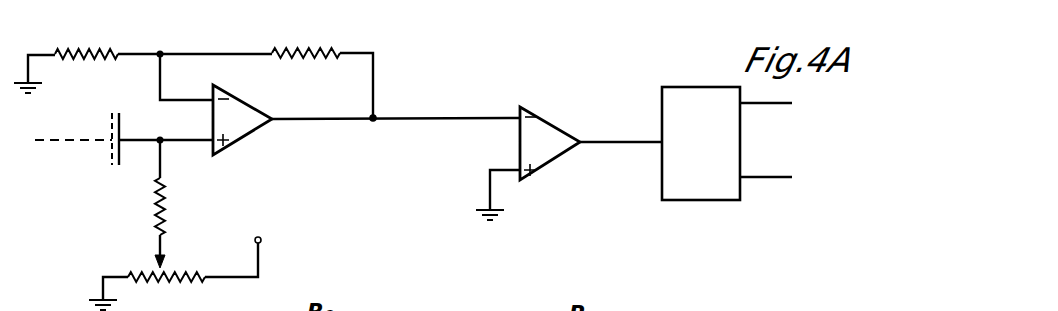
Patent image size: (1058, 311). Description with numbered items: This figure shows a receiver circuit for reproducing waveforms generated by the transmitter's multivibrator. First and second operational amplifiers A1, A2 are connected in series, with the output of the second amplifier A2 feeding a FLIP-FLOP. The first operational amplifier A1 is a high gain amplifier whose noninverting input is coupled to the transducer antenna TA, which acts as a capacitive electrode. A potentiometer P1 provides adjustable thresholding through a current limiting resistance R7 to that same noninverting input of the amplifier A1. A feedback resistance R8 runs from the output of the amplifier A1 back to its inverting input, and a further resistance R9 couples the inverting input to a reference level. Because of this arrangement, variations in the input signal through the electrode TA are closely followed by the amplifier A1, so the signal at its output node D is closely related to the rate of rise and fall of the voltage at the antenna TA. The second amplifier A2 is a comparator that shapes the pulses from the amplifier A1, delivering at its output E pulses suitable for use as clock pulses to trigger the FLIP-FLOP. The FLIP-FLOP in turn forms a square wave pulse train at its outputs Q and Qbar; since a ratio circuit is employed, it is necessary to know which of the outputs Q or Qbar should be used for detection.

The resistance R9 is at (82, 44).
The feedback resistance R8 is at (316, 40).
The current limiting resistance R7 is at (157, 209).
The potentiometer P1 is at (183, 268).
The transducer antenna TA is at (109, 127).
The first operational amplifier A1 is at (242, 120).
The second operational amplifier A2 is at (550, 143).
The node D (output of A1) D is at (375, 130).
The node E (output of A2) E is at (621, 155).
The flip-flop FLIP-FLOP is at (681, 112).
The output Q is at (778, 104).
The output Q-bar Qbar is at (815, 167).